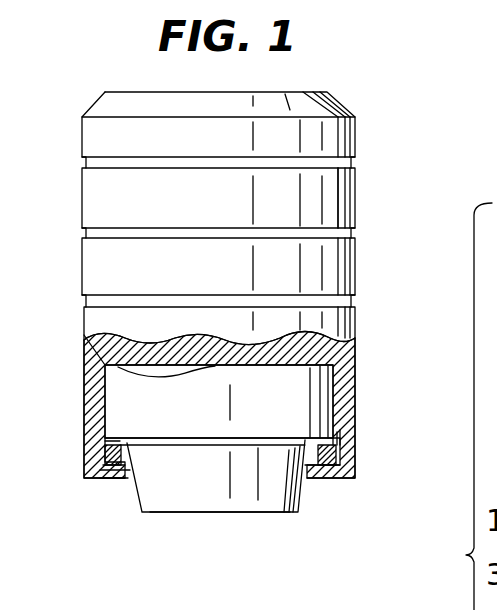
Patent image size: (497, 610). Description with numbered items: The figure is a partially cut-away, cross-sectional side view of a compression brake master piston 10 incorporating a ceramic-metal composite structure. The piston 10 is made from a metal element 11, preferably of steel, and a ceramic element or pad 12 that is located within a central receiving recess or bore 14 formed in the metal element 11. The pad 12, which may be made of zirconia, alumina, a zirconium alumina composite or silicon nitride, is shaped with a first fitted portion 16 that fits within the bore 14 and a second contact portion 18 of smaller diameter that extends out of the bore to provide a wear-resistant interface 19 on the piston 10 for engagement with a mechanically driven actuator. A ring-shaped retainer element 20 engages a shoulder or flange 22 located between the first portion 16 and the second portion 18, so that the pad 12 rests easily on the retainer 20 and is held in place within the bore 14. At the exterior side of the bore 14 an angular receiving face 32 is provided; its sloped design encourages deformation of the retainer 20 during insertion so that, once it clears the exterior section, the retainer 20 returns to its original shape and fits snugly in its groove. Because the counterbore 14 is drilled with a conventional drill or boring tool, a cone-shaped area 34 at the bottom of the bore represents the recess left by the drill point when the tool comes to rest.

The compression brake master piston 10 is at (362, 130).
The metal element 11 is at (358, 210).
The ceramic element or pad 12 is at (306, 393).
The central receiving recess or bore 14 is at (310, 483).
The first fitted portion 16 is at (100, 418).
The second contact portion 18 is at (268, 492).
The wear-resistant interface 19 is at (222, 512).
The retainer element 20 is at (90, 462).
The shoulder or flange 22 is at (352, 440).
The angular receiving face 32 is at (102, 472).
The cone-shaped area 34 is at (103, 352).